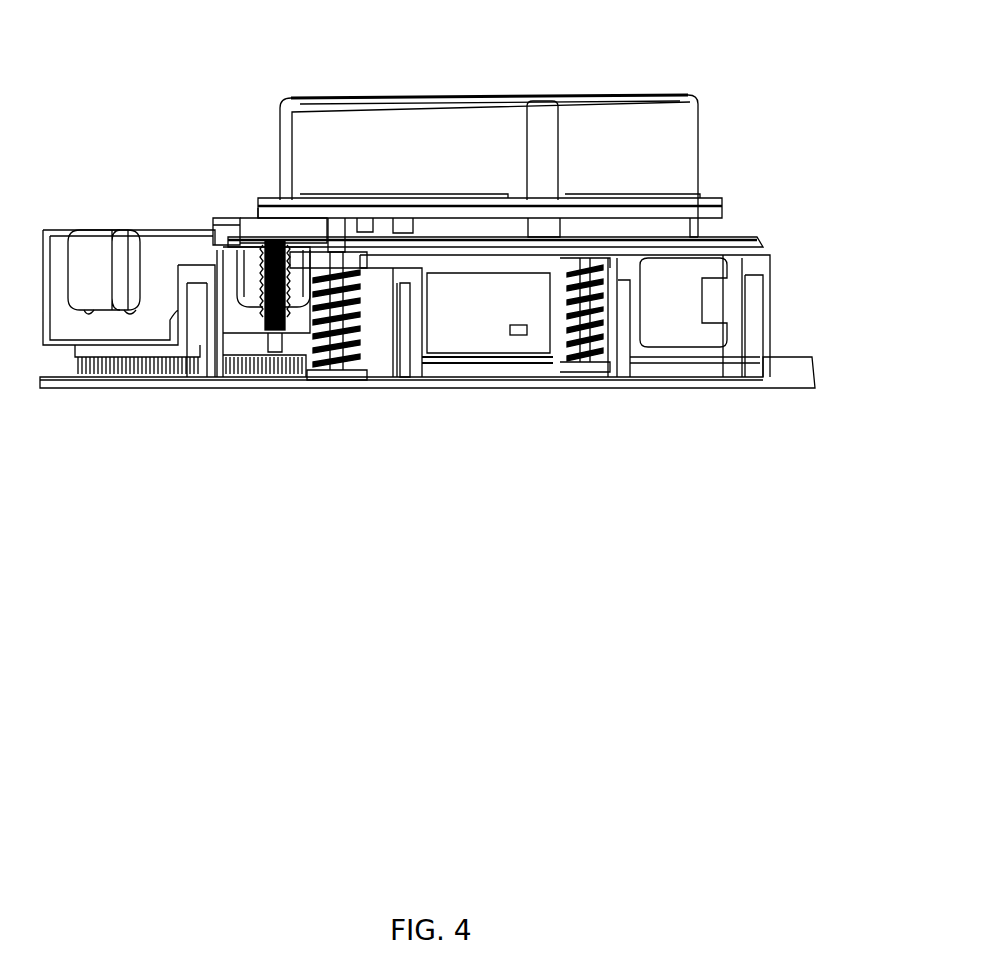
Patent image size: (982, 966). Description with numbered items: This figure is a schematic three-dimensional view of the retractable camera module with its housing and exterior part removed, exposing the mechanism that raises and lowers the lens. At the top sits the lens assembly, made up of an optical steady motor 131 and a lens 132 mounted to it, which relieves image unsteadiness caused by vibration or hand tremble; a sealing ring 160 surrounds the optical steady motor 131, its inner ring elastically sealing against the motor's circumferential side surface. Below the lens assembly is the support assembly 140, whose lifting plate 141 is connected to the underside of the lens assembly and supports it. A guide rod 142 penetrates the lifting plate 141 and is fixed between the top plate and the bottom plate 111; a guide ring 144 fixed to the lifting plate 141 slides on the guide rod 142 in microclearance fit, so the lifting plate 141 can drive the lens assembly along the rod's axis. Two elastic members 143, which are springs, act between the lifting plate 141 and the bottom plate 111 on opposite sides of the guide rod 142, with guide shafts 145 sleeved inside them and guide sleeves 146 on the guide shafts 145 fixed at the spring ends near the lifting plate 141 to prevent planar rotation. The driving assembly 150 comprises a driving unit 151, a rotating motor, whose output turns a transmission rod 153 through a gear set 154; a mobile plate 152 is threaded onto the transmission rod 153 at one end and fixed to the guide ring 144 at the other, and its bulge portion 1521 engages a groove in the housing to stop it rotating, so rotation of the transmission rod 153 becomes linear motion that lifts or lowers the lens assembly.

The bottom plate 111 is at (783, 368).
The optical steady motor 131 is at (668, 151).
The lens 132 is at (492, 100).
The support assembly 140 is at (620, 470).
The lifting plate 141 is at (738, 242).
The guide rod 142 is at (370, 277).
The elastic member 143 is at (323, 333).
The guide ring 144 is at (393, 283).
The guide shaft 145 is at (345, 358).
The guide sleeve 146 is at (356, 318).
The driving assembly 150 is at (240, 470).
The driving unit 151 is at (170, 327).
The mobile plate 152 is at (273, 228).
The bulge portion 1521 is at (226, 220).
The transmission rod 153 is at (273, 342).
The gear set 154 is at (194, 372).
The sealing ring 160 is at (692, 208).